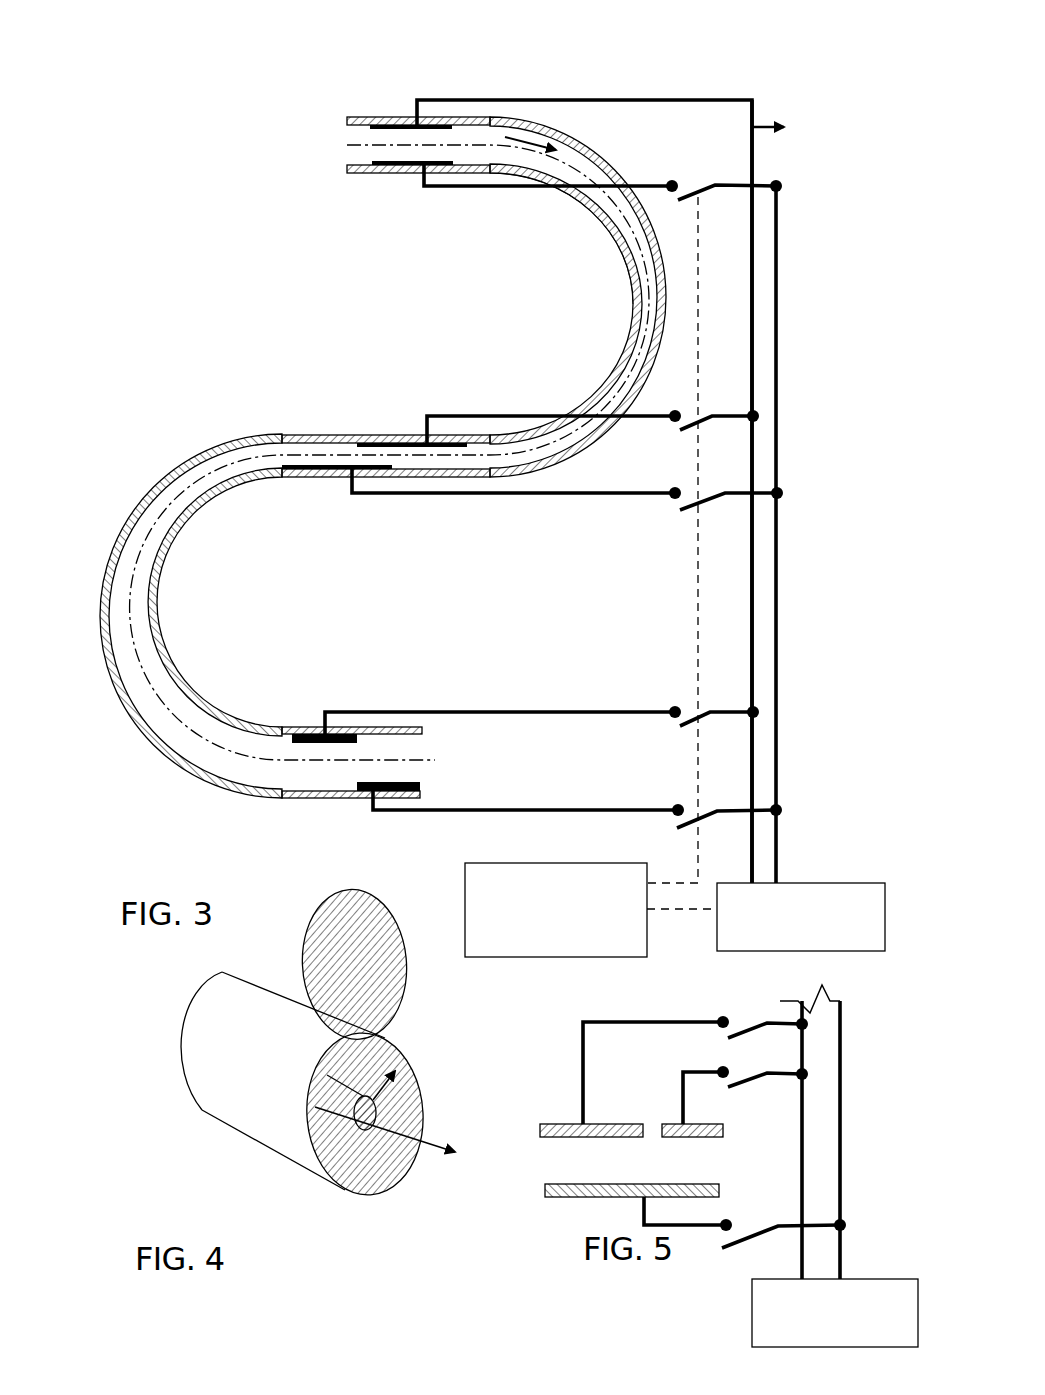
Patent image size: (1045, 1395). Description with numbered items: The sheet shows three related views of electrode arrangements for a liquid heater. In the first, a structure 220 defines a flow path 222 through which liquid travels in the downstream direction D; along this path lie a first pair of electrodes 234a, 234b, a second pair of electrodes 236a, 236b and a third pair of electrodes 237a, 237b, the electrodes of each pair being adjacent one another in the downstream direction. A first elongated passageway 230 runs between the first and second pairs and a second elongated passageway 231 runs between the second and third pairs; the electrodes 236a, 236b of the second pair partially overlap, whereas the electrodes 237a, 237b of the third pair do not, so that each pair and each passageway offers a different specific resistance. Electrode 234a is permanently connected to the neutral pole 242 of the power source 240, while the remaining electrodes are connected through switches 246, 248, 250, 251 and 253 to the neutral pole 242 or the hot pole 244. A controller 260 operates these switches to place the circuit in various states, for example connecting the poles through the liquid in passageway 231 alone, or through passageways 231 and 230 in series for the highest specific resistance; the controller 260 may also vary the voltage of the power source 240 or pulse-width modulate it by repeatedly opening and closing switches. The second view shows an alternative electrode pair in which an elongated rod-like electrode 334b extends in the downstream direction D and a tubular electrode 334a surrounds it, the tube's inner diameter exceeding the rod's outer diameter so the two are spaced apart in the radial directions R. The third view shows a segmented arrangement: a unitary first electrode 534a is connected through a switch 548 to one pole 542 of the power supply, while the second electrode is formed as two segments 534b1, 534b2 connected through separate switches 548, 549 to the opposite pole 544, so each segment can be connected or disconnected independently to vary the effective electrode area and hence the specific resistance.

In FIG. 3, the structure 220 is at (614, 155).
In FIG. 3, the flow path 222 is at (477, 133).
In FIG. 3, the first elongated passageway 230 is at (608, 208).
In FIG. 3, the second elongated passageway 231 is at (133, 554).
In FIG. 3, the electrode of first pair 234a is at (440, 127).
In FIG. 3, the electrode of first pair 234b is at (410, 172).
In FIG. 3, the electrode of second pair 236a is at (382, 438).
In FIG. 3, the electrode of second pair 236b is at (332, 473).
In FIG. 3, the electrode of third pair 237a is at (325, 720).
In FIG. 3, the electrode of third pair 237b is at (358, 793).
In FIG. 3, the power source 240 is at (785, 888).
In FIG. 3, the neutral pole 242 is at (753, 635).
In FIG. 3, the hot pole 244 is at (777, 645).
In FIG. 3, the switch 246 is at (697, 190).
In FIG. 3, the switch 248 is at (698, 418).
In FIG. 3, the switch 250 is at (712, 495).
In FIG. 3, the switch 251 is at (698, 715).
In FIG. 3, the switch 253 is at (712, 810).
In FIG. 3, the controller 260 is at (632, 928).
In FIG. 4, the tubular electrode 334a is at (368, 1035).
In FIG. 4, the rod-like electrode 334b is at (337, 1102).
In FIG. 5, the first electrode 534a is at (548, 1198).
In FIG. 5, the segment of second electrode 534b1 is at (540, 1137).
In FIG. 5, the segment of second electrode 534b2 is at (723, 1132).
In FIG. 5, the pole of power supply 542 is at (845, 1268).
In FIG. 5, the opposite pole of power supply 544 is at (802, 1097).
In FIG. 5, the switch 548 is at (777, 1030).
In FIG. 5, the switch 549 is at (750, 1072).
In FIG. 3, the downstream direction D is at (552, 142).
In FIG. 4, the downstream direction D is at (420, 1133).
In FIG. 4, the radial directions R is at (392, 1050).